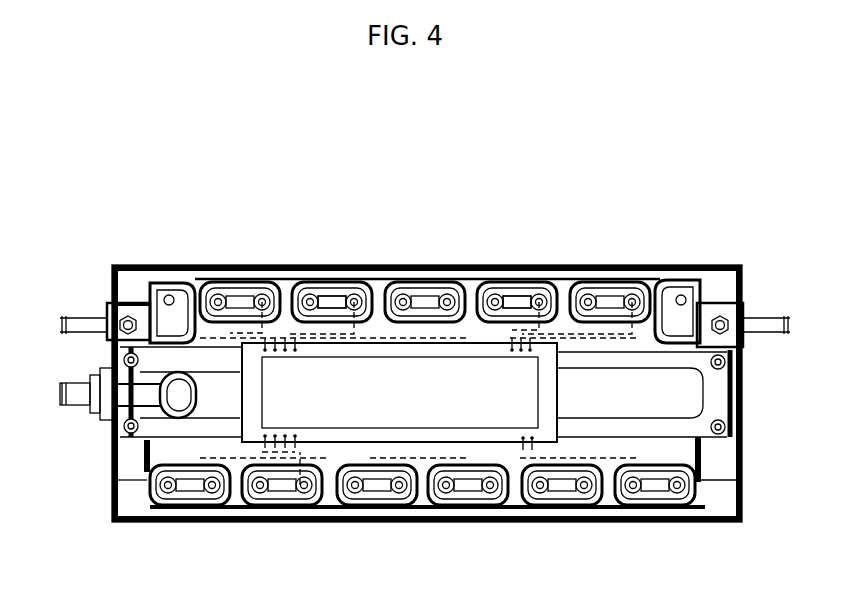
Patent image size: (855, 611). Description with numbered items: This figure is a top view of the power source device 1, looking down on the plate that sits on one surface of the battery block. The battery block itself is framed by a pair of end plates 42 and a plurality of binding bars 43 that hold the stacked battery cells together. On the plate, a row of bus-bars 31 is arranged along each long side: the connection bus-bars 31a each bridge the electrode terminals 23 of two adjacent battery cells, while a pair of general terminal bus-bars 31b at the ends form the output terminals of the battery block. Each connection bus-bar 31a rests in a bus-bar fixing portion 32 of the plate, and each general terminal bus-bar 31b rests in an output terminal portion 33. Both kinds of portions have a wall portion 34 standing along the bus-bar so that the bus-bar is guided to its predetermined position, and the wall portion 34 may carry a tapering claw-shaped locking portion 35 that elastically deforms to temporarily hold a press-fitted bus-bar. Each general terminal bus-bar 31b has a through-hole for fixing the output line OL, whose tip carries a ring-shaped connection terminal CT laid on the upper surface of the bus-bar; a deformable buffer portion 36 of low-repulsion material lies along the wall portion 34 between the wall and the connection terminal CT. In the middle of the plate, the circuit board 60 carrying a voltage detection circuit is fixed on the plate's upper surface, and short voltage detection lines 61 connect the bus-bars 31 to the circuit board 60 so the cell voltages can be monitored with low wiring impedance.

The power source device 1 is at (86, 168).
The electrode terminal 23 is at (500, 483).
The bus-bar 31 is at (432, 281).
The connection bus-bar 31a is at (230, 296).
The general terminal bus-bar 31b is at (148, 283).
The bus-bar fixing portion 32 is at (578, 276).
The output terminal portion 33 is at (660, 280).
The wall portion 34 is at (118, 300).
The locking portion 35 is at (195, 500).
The buffer portion 36 is at (100, 310).
The end plate 42 is at (125, 462).
The binding bar 43 is at (135, 512).
The circuit board 60 is at (368, 420).
The voltage detection line 61 is at (300, 462).
The output line OL is at (80, 332).
The connection terminal CT is at (106, 345).